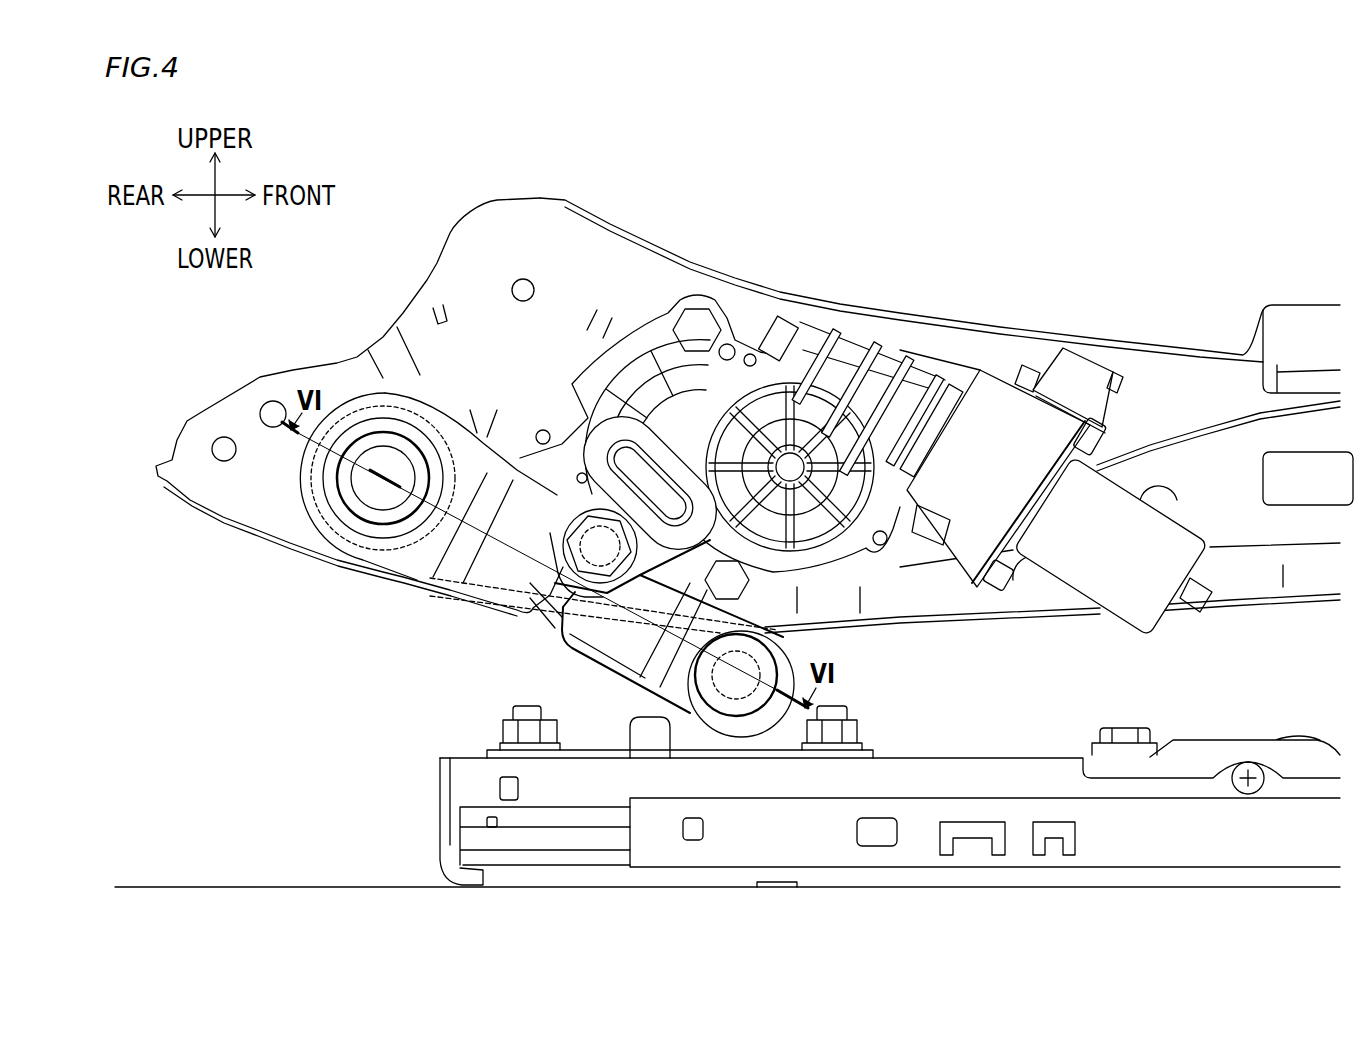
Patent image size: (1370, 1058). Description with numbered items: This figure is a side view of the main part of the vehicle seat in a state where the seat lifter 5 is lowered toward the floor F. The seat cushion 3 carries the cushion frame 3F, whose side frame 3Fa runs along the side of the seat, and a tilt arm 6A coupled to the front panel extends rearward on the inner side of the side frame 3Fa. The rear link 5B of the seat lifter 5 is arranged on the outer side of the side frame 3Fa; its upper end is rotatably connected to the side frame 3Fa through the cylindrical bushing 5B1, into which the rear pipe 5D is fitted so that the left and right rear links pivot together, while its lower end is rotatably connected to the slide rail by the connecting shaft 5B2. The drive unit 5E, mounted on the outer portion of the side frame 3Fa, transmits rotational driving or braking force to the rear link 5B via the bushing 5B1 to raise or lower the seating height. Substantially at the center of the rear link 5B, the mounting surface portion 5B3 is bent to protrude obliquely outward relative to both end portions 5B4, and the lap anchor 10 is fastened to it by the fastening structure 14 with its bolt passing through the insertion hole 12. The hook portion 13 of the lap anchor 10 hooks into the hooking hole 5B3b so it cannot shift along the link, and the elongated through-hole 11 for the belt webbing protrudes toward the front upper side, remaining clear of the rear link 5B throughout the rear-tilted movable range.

The seat cushion 3 is at (1127, 180).
The cushion frame 3F is at (1080, 327).
The side frame 3Fa is at (1022, 327).
The seat lifter 5 is at (433, 681).
The rear link 5B is at (318, 542).
The bushing 5B1 is at (352, 428).
The connecting shaft 5B2 is at (742, 687).
The mounting surface portion 5B3 is at (512, 560).
The hooking hole 5B3b is at (540, 622).
The end portions 5B4 is at (410, 560).
The rear pipe 5D is at (370, 415).
The drive unit 5E is at (985, 410).
The tilt arm 6A is at (1298, 322).
The lap anchor 10 is at (582, 483).
The through-hole 11 is at (640, 450).
The insertion hole 12 is at (598, 560).
The hook portion 13 is at (545, 622).
The fastening structure 14 is at (582, 470).
The floor F is at (213, 887).